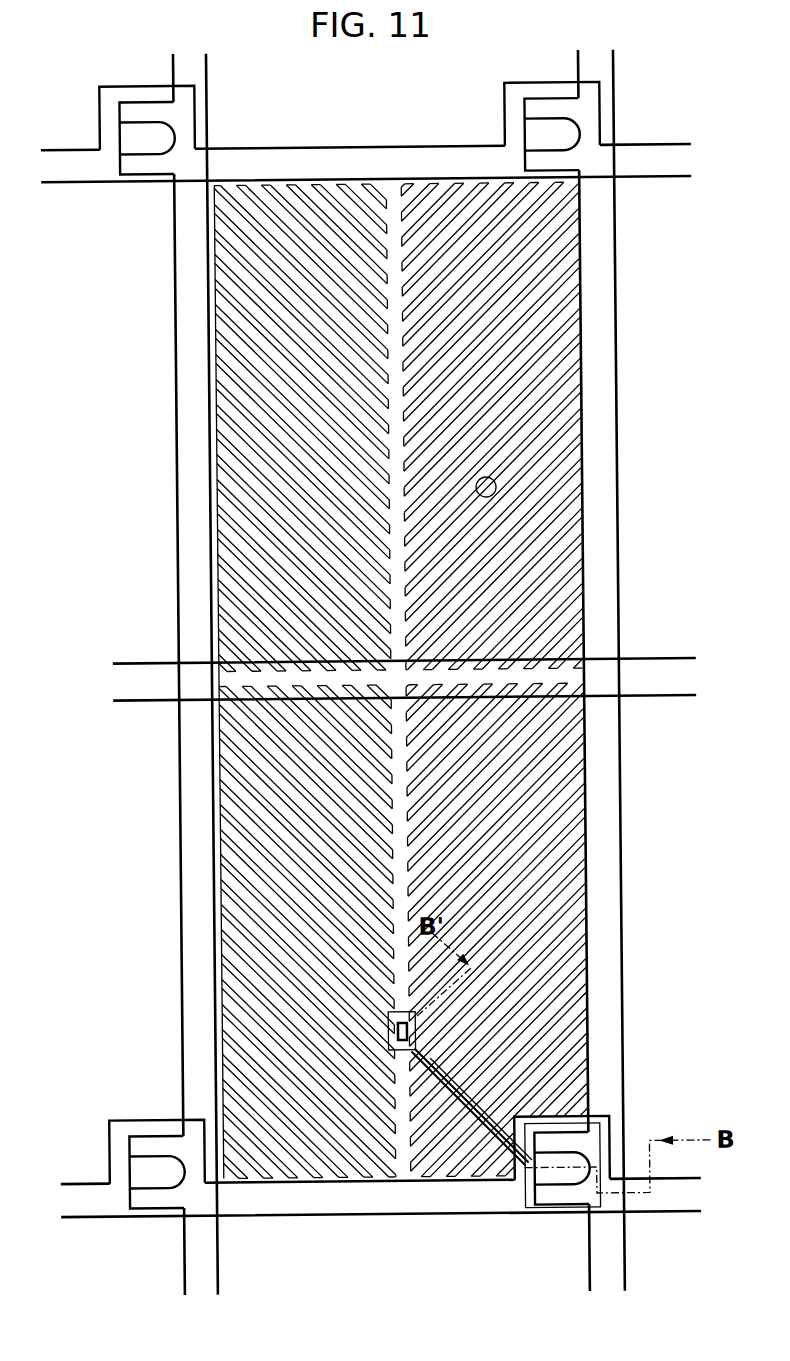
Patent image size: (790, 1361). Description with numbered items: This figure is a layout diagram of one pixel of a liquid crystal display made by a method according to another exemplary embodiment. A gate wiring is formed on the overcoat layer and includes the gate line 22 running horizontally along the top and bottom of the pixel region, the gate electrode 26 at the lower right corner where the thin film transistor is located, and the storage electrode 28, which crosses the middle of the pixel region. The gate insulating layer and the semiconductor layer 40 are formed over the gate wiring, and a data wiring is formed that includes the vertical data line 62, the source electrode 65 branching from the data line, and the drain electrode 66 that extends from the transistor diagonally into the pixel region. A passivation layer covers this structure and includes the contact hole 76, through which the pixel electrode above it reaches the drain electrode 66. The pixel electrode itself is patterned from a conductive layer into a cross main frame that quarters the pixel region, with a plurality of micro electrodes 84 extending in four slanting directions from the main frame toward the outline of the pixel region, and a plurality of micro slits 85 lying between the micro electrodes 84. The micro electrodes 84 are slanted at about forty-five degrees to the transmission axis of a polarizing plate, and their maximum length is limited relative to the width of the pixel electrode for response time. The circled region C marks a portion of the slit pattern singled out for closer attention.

The gate line 22 is at (354, 1220).
The gate electrode 26 is at (596, 1118).
The storage electrode 28 is at (646, 660).
The semiconductor layer 40 is at (619, 1212).
The data line 62 is at (615, 809).
The source electrode 65 is at (509, 1210).
The drain electrode 66 is at (511, 1203).
The contact hole 76 is at (379, 1030).
The micro electrodes 84 is at (552, 217).
The micro slits 85 is at (551, 235).
The enlarged portion marker C is at (493, 487).